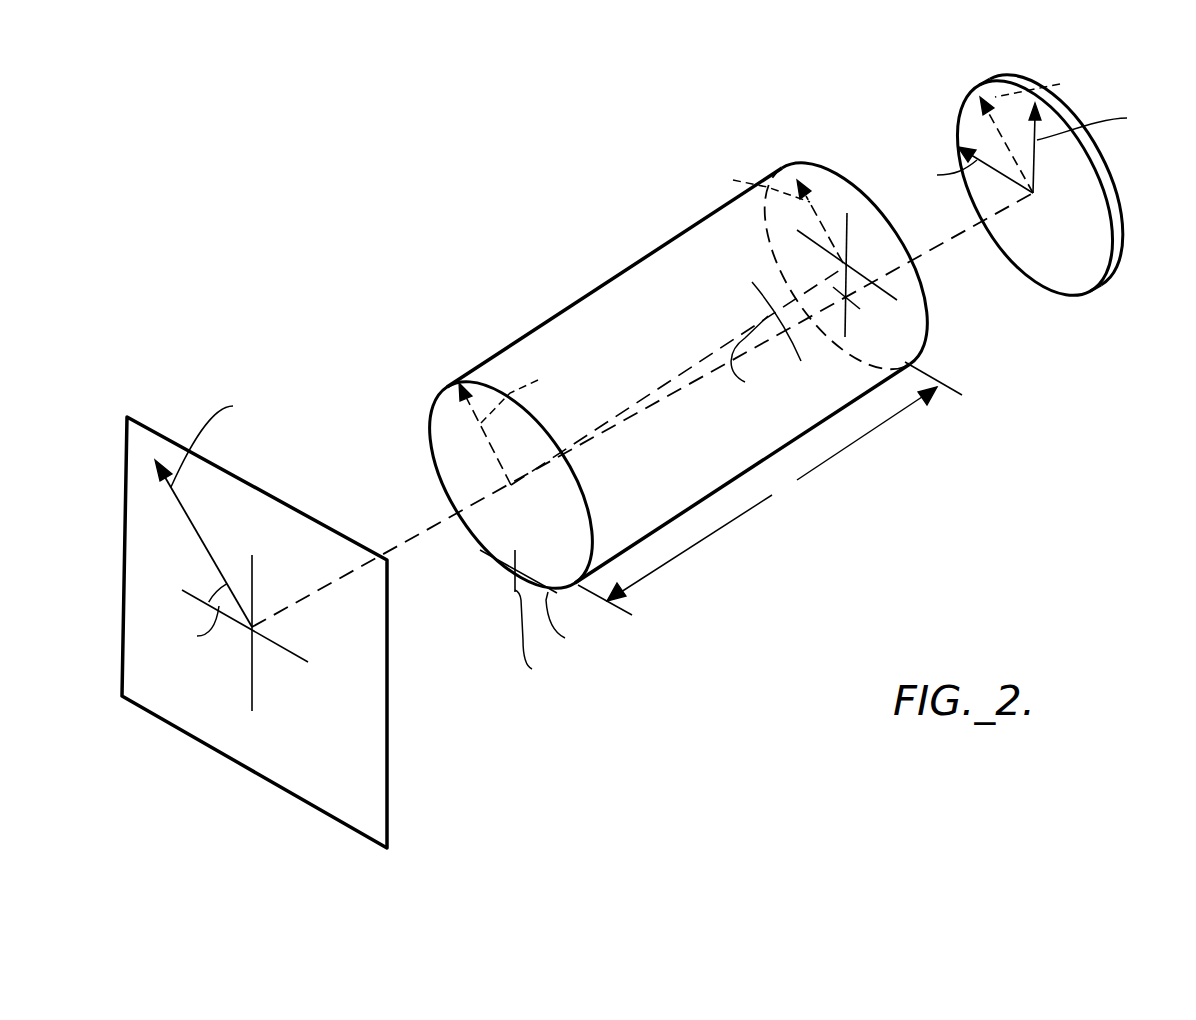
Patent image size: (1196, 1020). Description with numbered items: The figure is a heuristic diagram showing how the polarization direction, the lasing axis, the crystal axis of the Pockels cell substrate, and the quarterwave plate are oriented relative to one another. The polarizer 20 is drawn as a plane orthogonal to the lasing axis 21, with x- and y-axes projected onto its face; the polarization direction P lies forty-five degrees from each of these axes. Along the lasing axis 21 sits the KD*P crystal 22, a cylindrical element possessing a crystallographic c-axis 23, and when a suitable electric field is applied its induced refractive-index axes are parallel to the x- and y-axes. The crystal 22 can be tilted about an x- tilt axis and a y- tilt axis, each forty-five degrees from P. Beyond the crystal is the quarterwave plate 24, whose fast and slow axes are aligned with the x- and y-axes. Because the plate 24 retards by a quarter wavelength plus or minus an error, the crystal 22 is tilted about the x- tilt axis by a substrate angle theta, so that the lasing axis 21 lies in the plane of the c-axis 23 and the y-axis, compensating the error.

The polarizer 20 is at (388, 756).
The lasing axis 21 is at (943, 247).
The KD*P crystal 22 is at (572, 303).
The crystallographic c-axis 23 is at (710, 355).
The quarterwave plate 24 is at (957, 132).